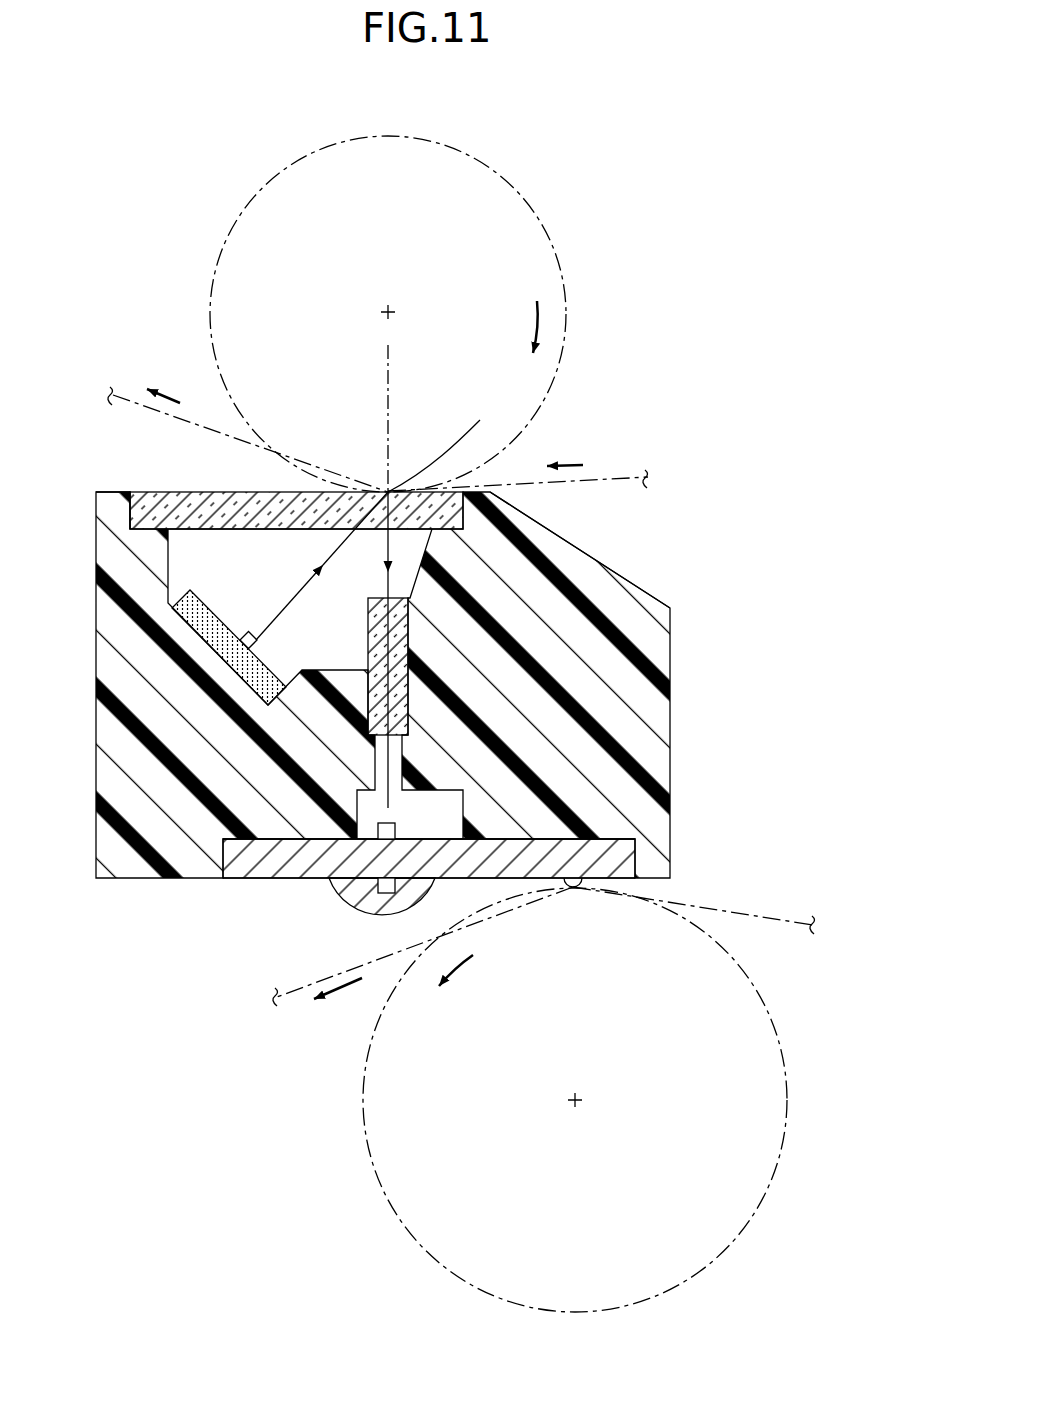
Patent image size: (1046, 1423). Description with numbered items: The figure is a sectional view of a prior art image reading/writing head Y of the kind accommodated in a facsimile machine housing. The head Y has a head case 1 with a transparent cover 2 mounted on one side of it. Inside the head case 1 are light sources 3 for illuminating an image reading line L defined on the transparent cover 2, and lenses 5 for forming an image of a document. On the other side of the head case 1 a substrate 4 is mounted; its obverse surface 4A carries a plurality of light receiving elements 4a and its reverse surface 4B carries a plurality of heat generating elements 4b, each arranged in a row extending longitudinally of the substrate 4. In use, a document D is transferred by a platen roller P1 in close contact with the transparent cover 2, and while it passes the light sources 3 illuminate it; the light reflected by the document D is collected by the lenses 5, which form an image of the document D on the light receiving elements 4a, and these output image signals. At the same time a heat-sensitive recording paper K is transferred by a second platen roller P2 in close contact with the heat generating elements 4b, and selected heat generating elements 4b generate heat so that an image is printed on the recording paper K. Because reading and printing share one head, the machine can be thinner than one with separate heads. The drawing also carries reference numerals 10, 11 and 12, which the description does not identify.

The head case 1 is at (672, 636).
The transparent cover 2 is at (207, 497).
The light source 3 is at (258, 640).
The substrate 4 is at (257, 882).
The obverse surface 4A is at (600, 839).
The reverse surface 4B is at (300, 880).
The light receiving element 4a is at (396, 830).
The heat generating element 4b is at (573, 888).
The lens 5 is at (367, 633).
The sensor unit 10 is at (143, 498).
The hole 11 is at (372, 818).
The reflecting member 12 is at (200, 582).
The platen roller P1 is at (550, 185).
The platen roller P2 is at (783, 1048).
The image reading line L is at (441, 438).
The document D is at (607, 477).
The image reading/writing head Y is at (655, 552).
The recording paper K is at (750, 915).